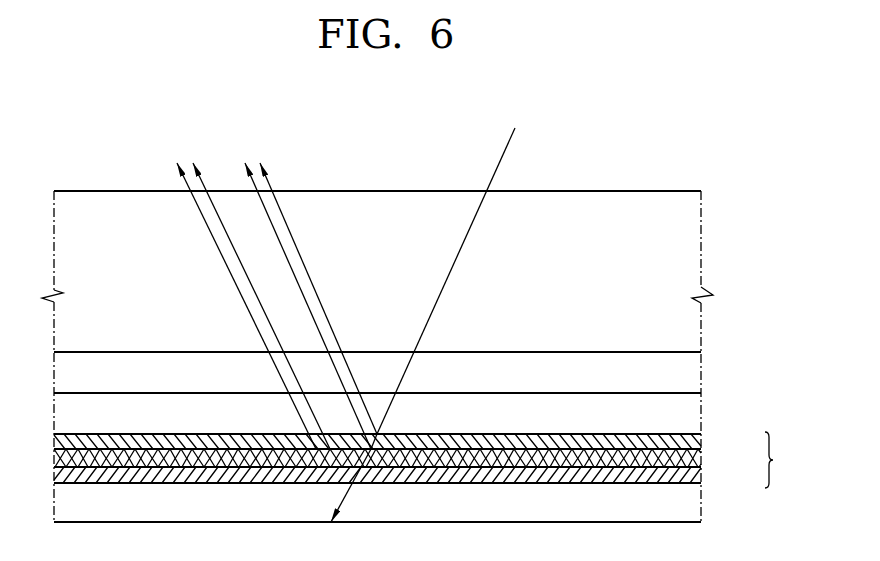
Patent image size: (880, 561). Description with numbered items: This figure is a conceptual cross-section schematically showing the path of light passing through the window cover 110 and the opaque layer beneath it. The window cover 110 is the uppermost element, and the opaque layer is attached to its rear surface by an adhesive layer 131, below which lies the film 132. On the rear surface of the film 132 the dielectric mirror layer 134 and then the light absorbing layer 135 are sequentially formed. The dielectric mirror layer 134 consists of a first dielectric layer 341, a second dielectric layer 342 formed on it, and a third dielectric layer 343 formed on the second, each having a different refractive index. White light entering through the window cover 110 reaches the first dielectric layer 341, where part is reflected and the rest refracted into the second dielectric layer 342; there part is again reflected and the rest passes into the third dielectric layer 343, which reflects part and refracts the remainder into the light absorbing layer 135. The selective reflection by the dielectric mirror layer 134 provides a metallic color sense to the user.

The window cover 110 is at (693, 266).
The adhesive layer 131 is at (697, 374).
The film 132 is at (697, 411).
The dielectric mirror layer 134 is at (433, 460).
The first dielectric layer 341 is at (700, 443).
The second dielectric layer 342 is at (700, 462).
The third dielectric layer 343 is at (700, 479).
The light absorbing layer 135 is at (697, 511).